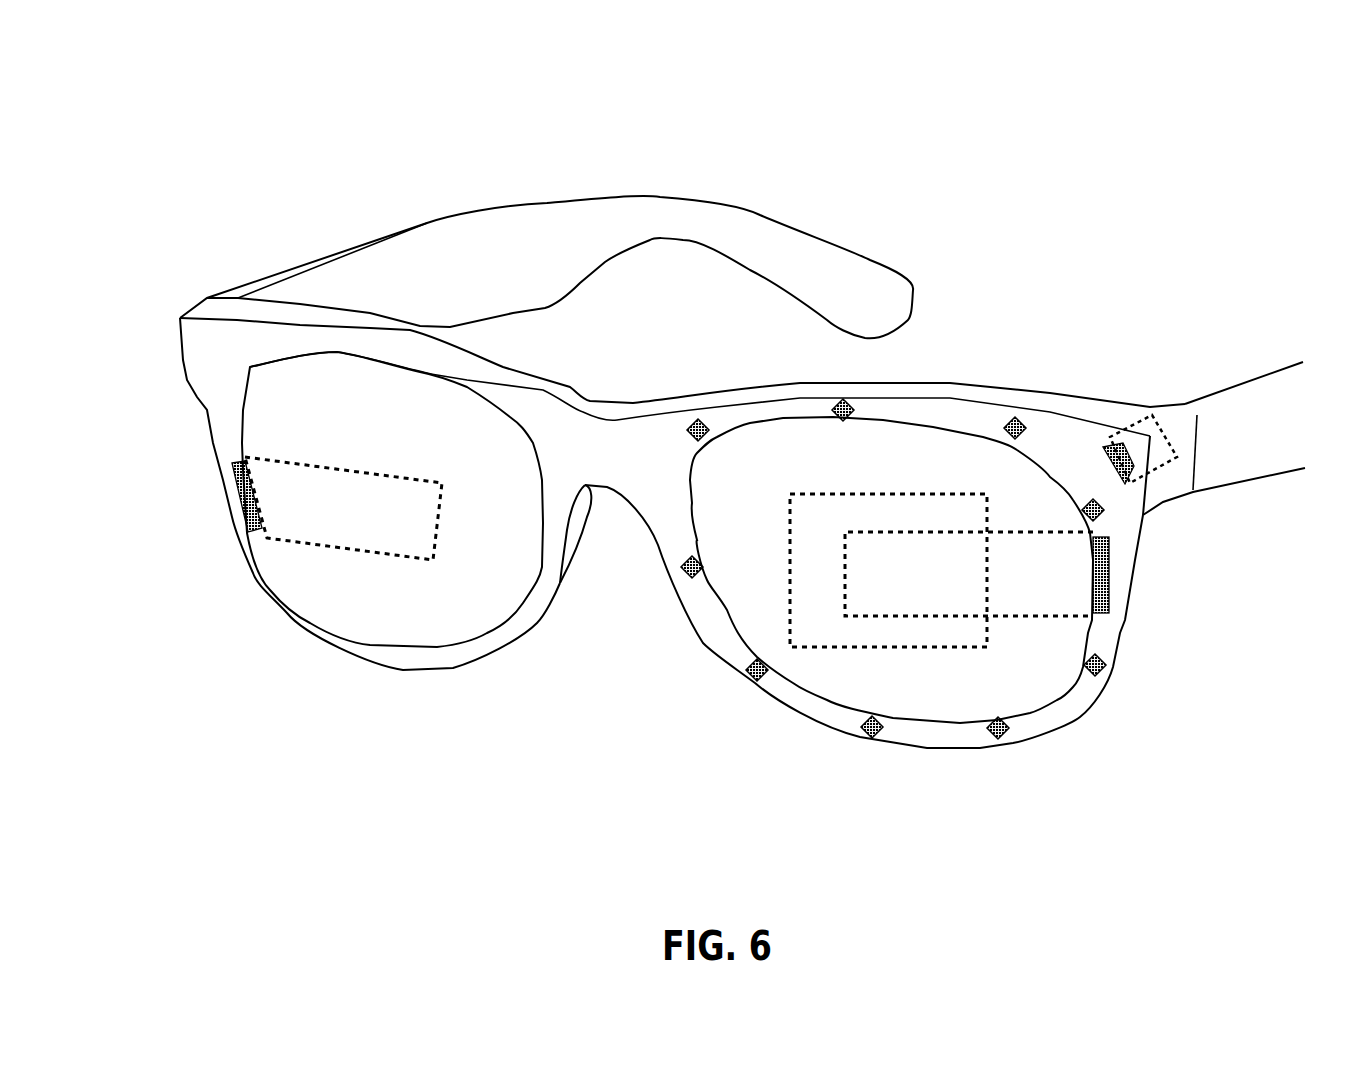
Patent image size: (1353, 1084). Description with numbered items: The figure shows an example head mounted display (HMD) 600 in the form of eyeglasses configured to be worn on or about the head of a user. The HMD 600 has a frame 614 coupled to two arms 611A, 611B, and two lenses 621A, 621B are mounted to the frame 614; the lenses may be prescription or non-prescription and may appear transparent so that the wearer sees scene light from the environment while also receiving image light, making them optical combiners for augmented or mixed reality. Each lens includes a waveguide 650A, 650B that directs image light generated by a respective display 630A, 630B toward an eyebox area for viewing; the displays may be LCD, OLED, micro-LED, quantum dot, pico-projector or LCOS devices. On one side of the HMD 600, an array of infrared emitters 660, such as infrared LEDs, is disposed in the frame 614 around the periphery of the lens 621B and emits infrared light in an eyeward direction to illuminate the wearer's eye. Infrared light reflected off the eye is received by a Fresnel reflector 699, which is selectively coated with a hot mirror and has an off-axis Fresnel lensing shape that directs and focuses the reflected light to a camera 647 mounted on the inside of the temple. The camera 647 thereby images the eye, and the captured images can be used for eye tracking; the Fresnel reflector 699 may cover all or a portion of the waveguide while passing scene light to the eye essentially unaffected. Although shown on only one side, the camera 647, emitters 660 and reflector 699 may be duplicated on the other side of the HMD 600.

The head mounted display 600 is at (1267, 66).
The arm 611A is at (483, 282).
The arm 611B is at (1223, 448).
The frame 614 is at (200, 359).
The lens 621A is at (464, 539).
The lens 621B is at (920, 458).
The display 630A is at (242, 505).
The display 630B is at (1108, 578).
The camera 647 is at (1158, 426).
The waveguide 650A is at (275, 462).
The waveguide 650B is at (1086, 617).
The infrared emitters 660 is at (835, 418).
The Fresnel reflector 699 is at (790, 537).